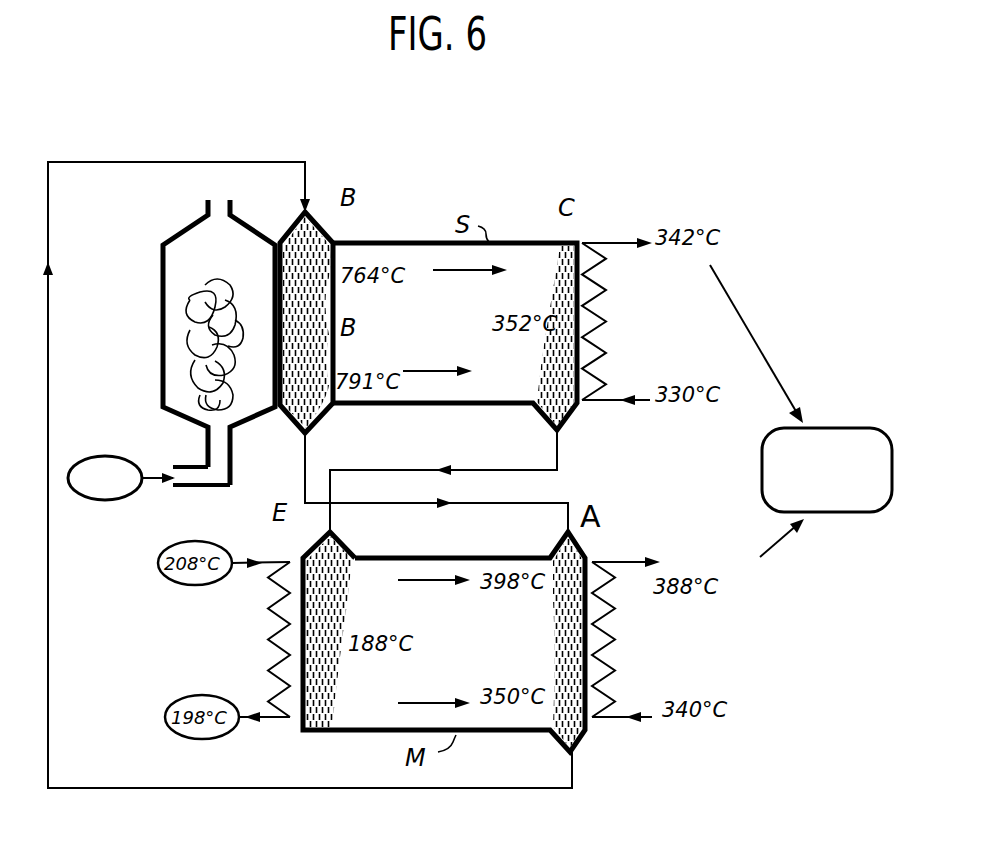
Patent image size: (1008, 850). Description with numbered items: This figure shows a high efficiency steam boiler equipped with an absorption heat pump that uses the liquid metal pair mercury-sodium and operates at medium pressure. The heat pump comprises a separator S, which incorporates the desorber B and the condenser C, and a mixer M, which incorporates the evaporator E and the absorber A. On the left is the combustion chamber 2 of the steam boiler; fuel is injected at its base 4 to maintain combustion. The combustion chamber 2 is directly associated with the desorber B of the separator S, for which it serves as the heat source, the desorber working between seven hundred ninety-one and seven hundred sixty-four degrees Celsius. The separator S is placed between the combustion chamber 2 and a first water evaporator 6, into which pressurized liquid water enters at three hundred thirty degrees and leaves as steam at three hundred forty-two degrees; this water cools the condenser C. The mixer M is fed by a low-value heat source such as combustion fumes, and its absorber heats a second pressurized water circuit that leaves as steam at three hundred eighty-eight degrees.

The combustion chamber 2 is at (178, 298).
The base 4 is at (183, 467).
The first water evaporator 6 is at (605, 348).